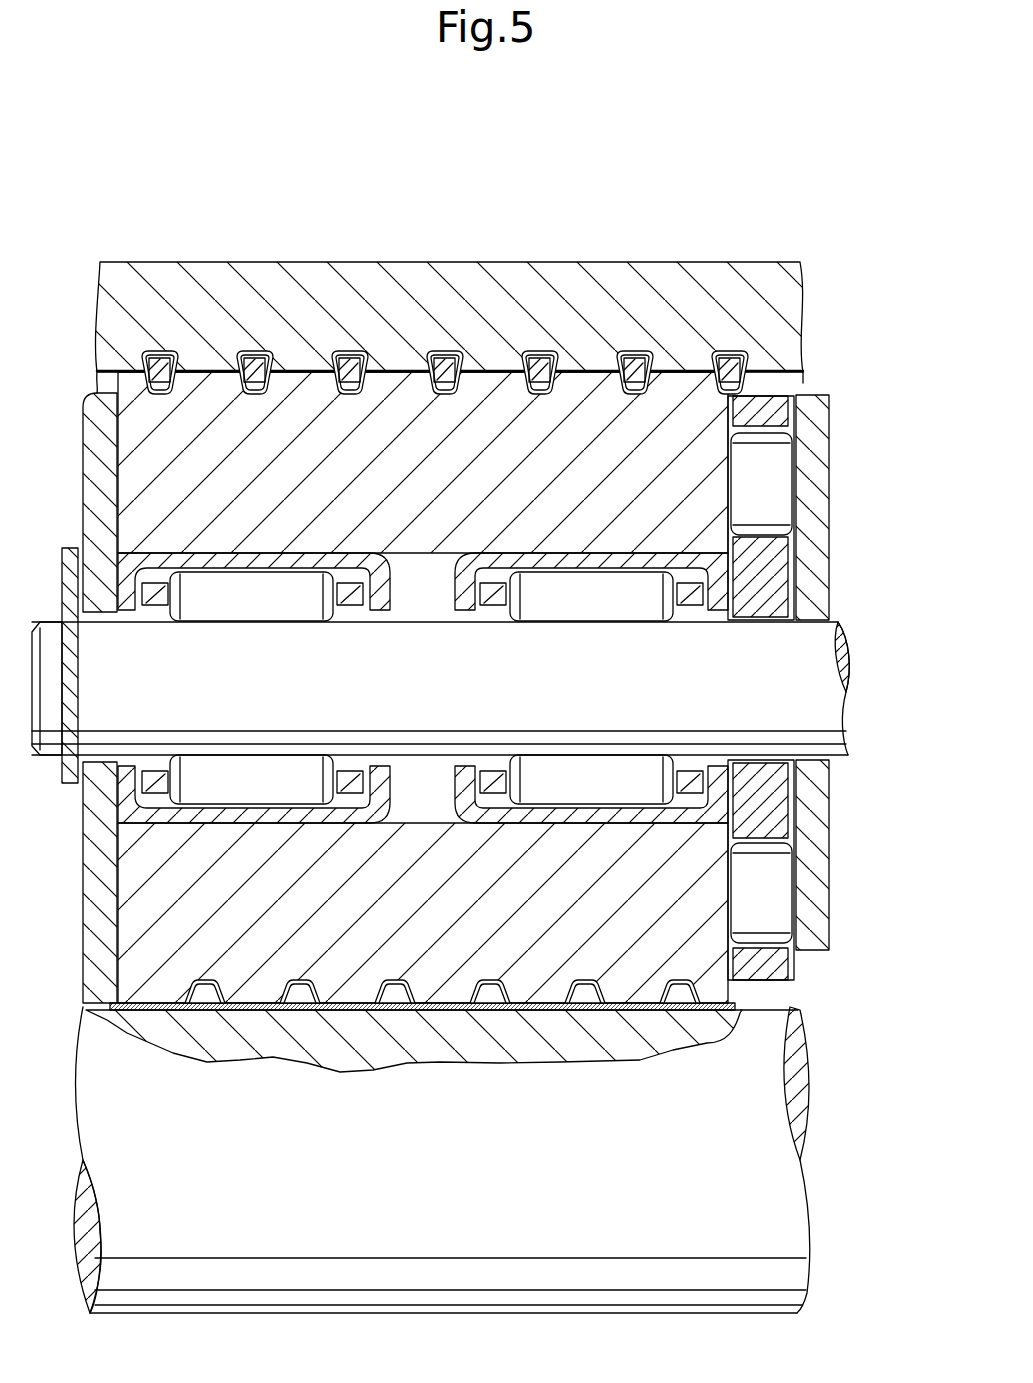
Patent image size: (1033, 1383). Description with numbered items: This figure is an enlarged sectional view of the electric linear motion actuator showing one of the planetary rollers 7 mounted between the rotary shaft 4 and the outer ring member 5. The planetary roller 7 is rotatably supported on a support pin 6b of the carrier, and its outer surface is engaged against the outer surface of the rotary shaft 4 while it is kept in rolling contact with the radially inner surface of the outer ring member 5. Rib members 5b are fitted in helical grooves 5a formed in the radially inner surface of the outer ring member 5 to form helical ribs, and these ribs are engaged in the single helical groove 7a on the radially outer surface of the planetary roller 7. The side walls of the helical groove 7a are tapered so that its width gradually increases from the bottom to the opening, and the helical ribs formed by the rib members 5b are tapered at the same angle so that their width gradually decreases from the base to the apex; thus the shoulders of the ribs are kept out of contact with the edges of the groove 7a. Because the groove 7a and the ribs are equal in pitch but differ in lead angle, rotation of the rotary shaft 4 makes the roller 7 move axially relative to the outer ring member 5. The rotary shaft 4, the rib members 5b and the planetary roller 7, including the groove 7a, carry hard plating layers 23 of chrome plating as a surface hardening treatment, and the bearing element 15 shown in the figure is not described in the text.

The rotary shaft 4 is at (725, 1182).
The outer ring member 5 is at (668, 322).
The helical groove 5a is at (557, 363).
The rib member 5b is at (533, 370).
The support pin 6b is at (797, 702).
The planetary roller 7 is at (612, 505).
The helical groove 7a is at (548, 398).
The bearing 15 is at (262, 597).
The hard plating layer 23 is at (470, 370).